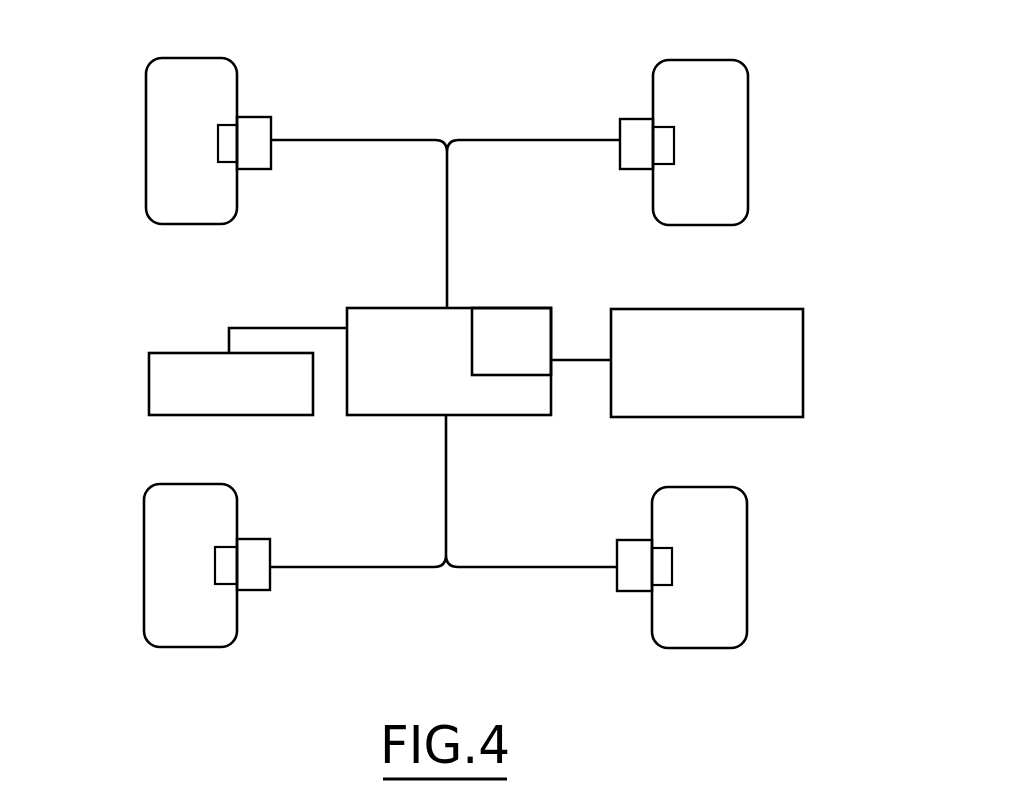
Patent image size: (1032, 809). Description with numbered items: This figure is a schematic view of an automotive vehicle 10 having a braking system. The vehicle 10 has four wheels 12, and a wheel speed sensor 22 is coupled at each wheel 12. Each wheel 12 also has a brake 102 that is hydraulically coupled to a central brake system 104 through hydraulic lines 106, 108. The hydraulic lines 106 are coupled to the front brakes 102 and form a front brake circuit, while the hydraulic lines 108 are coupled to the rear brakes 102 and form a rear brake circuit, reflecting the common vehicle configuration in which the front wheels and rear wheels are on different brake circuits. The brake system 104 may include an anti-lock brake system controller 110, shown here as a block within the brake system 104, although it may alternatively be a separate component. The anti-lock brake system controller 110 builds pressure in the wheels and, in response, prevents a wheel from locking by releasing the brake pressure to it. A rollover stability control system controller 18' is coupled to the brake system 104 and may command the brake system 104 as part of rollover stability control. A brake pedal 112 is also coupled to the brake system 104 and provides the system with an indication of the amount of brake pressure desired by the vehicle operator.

The automotive vehicle 10 is at (822, 193).
The wheel 12 is at (145, 160).
The wheel speed sensor 22 is at (272, 117).
The brakes 102 is at (222, 138).
The brake system 104 is at (407, 417).
The hydraulic lines 106 is at (407, 140).
The hydraulic lines 108 is at (448, 462).
The anti-lock brake system controller 110 is at (517, 305).
The brake pedal 112 is at (178, 352).
The rollover stability control system controller 18' is at (722, 358).